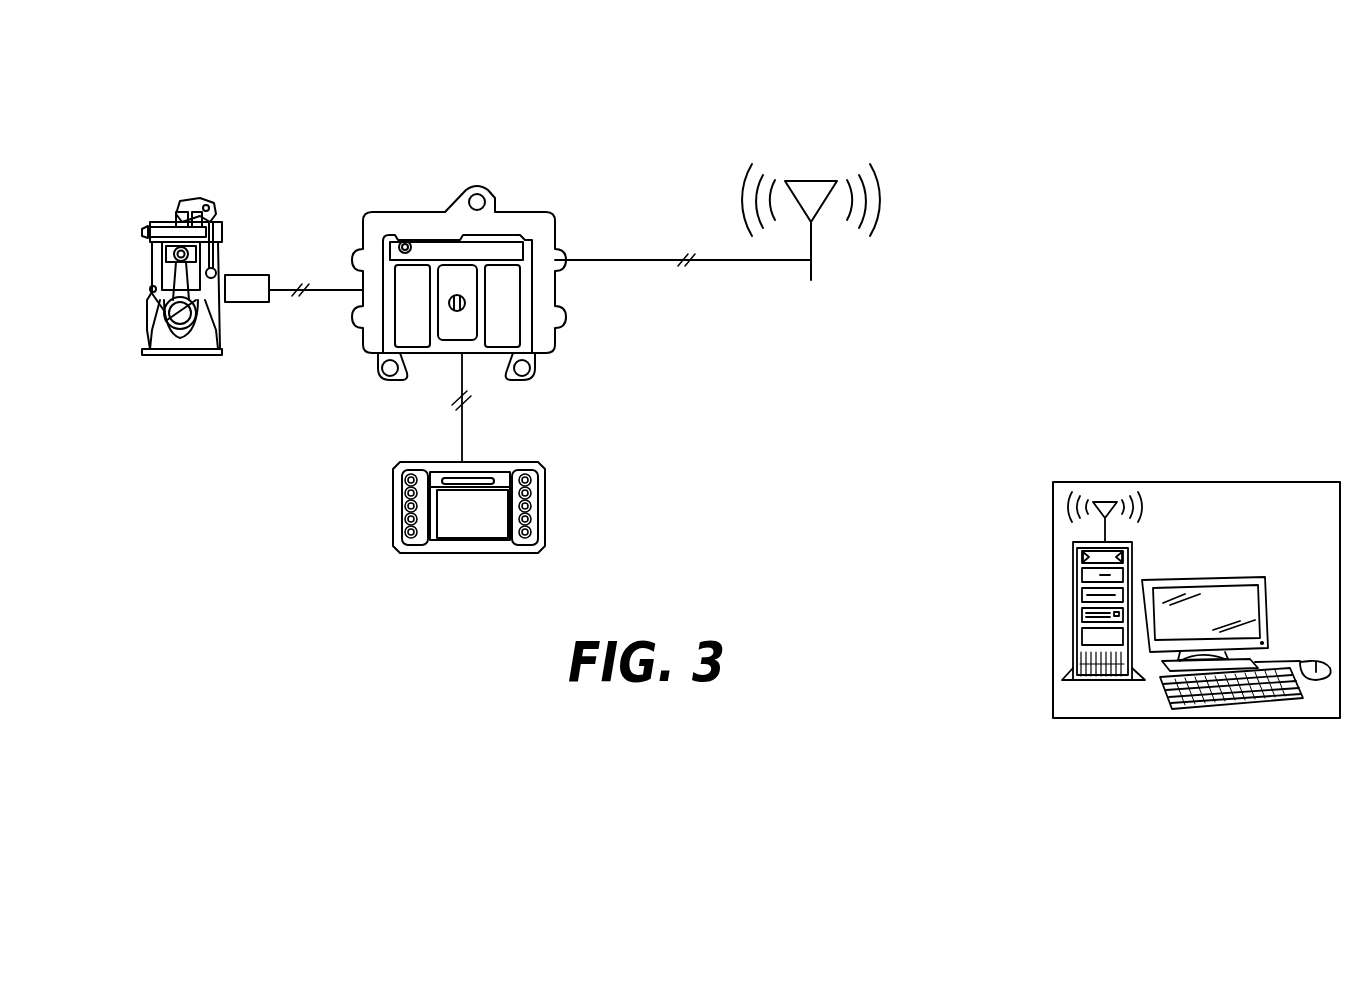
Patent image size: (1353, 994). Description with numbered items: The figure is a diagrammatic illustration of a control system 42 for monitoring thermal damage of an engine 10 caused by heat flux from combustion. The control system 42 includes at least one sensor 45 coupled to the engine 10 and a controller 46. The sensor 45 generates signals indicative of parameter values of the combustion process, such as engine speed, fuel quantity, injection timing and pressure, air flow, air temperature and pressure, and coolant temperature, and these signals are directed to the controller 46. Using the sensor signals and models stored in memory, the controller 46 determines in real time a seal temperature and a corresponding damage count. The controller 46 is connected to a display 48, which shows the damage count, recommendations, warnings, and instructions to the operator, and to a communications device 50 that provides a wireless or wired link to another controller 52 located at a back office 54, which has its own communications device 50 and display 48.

The engine 10 is at (236, 183).
The control system 42 is at (1082, 106).
The sensor 45 is at (243, 275).
The controller 46 is at (510, 212).
The display 48 is at (546, 497).
The communications device 50 is at (813, 243).
The controller 52 is at (1133, 575).
The back office 54 is at (1053, 674).